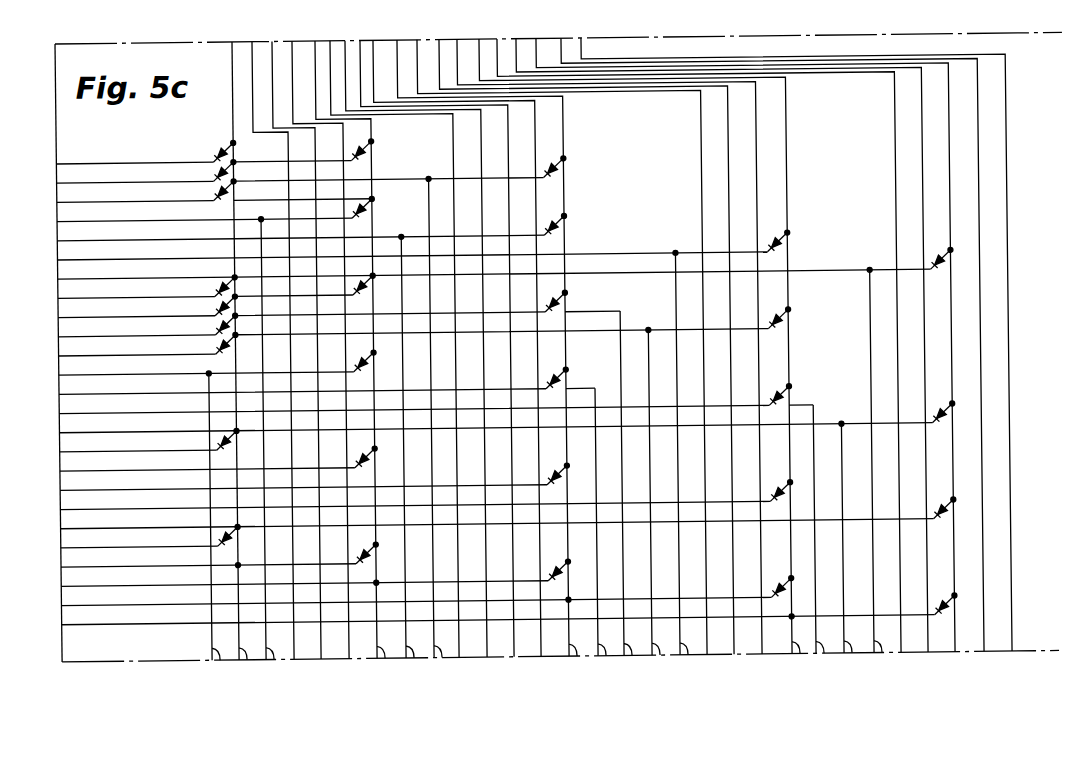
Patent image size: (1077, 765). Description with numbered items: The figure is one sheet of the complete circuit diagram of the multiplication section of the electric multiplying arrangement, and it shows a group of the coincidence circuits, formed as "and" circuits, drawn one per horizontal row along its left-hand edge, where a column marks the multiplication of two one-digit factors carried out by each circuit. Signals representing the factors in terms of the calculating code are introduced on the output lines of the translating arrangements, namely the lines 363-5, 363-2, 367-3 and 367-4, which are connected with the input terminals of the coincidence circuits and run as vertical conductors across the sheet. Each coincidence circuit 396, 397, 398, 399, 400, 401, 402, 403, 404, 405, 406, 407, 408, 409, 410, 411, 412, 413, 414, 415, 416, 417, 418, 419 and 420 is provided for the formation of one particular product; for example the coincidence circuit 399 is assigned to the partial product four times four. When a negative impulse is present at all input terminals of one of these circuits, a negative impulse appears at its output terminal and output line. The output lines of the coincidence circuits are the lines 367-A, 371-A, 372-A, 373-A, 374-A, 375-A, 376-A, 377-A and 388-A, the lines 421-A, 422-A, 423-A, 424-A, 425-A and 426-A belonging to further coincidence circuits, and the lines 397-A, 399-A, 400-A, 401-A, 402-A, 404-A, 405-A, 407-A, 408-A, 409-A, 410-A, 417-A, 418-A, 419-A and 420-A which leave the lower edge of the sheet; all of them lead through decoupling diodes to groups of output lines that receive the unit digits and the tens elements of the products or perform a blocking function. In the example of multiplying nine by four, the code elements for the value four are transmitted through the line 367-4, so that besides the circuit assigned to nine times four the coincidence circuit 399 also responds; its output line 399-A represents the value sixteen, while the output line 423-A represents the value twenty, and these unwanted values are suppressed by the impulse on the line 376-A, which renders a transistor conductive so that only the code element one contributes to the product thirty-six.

The coincidence circuit 396 is at (163, 151).
The coincidence circuit 397 is at (163, 170).
The coincidence circuit 398 is at (163, 189).
The coincidence circuit 399 is at (163, 209).
The coincidence circuit 400 is at (163, 228).
The coincidence circuit 401 is at (163, 247).
The coincidence circuit 402 is at (163, 266).
The coincidence circuit 403 is at (163, 285).
The coincidence circuit 404 is at (163, 305).
The coincidence circuit 405 is at (163, 324).
The coincidence circuit 406 is at (163, 343).
The coincidence circuit 407 is at (163, 362).
The coincidence circuit 408 is at (163, 381).
The coincidence circuit 409 is at (163, 401).
The coincidence circuit 410 is at (163, 420).
The coincidence circuit 411 is at (163, 439).
The coincidence circuit 412 is at (163, 458).
The coincidence circuit 413 is at (163, 477).
The coincidence circuit 414 is at (163, 497).
The coincidence circuit 415 is at (163, 516).
The coincidence circuit 416 is at (163, 535).
The coincidence circuit 417 is at (163, 554).
The coincidence circuit 418 is at (163, 573).
The coincidence circuit 419 is at (163, 593).
The coincidence circuit 420 is at (163, 612).
The output line 363-5 is at (235, 74).
The output line 363-2 is at (786, 233).
The output line 367-3 is at (566, 155).
The output line 367-4 is at (372, 179).
The output line 367-A is at (950, 209).
The output line 371-A is at (294, 127).
The output line 372-A is at (511, 172).
The output line 373-A is at (756, 207).
The output line 374-A is at (922, 187).
The output line 375-A is at (1006, 255).
The output line 376-A is at (274, 110).
The output line 377-A is at (536, 143).
The output line 388-A is at (978, 233).
The output line 421-A is at (482, 157).
The output line 422-A is at (731, 185).
The output line 423-A is at (255, 92).
The output line 424-A is at (454, 142).
The output line 425-A is at (702, 165).
The output line 426-A is at (896, 165).
The output line 397-A is at (448, 430).
The output line 399-A is at (275, 450).
The output line 400-A is at (409, 663).
The output line 401-A is at (697, 465).
The output line 402-A is at (877, 663).
The output line 404-A is at (634, 496).
The output line 405-A is at (655, 663).
The output line 407-A is at (214, 529).
The output line 408-A is at (601, 663).
The output line 409-A is at (819, 663).
The output line 410-A is at (861, 550).
The output line 417-A is at (242, 663).
The output line 418-A is at (383, 632).
The output line 419-A is at (570, 639).
The output line 420-A is at (794, 647).